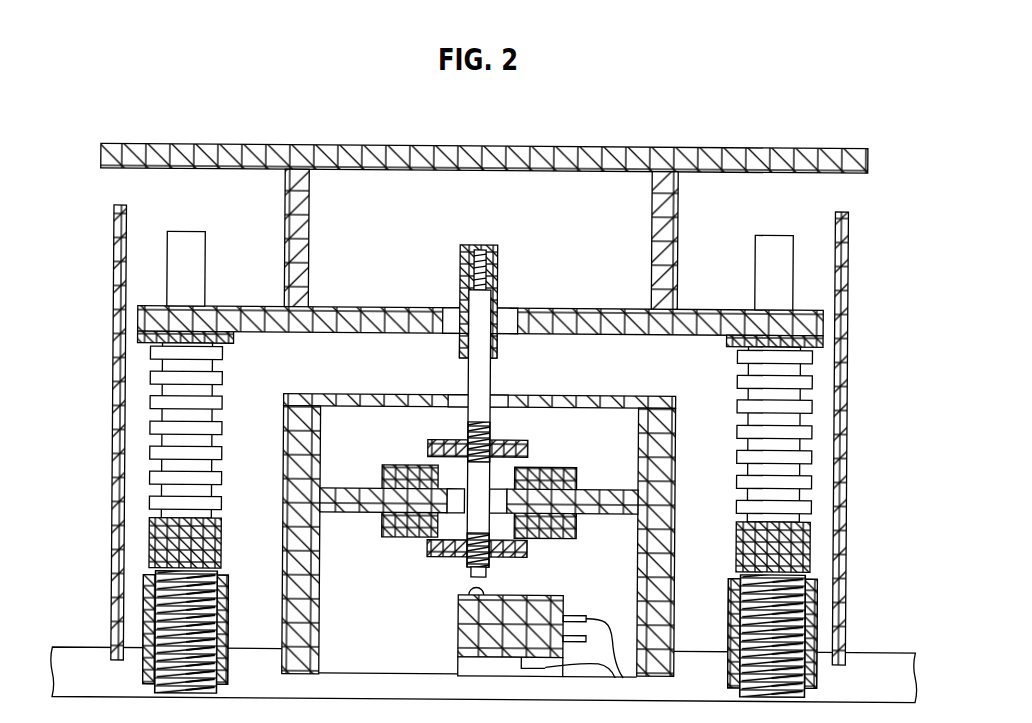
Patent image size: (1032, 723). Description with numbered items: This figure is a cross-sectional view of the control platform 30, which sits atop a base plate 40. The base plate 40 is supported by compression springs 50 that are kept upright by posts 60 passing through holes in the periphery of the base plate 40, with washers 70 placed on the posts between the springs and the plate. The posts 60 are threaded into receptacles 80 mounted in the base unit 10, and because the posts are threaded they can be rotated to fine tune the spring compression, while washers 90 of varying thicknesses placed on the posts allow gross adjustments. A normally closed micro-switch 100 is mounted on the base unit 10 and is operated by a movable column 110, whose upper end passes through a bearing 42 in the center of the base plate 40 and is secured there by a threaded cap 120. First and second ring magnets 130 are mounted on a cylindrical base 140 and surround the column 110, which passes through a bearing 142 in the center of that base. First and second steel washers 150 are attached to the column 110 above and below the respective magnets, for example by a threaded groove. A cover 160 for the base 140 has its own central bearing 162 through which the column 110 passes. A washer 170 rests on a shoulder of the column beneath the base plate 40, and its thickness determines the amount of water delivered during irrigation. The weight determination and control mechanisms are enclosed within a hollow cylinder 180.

The base unit 10 is at (872, 668).
The control platform 30 is at (540, 153).
The base plate 40 is at (600, 318).
The bearing 42 is at (442, 318).
The compression springs 50 is at (222, 435).
The posts 60 is at (190, 252).
The washers 70 is at (233, 343).
The receptacles 80 is at (229, 600).
The washers 90 is at (222, 535).
The micro-switch 100 is at (462, 612).
The movable column 110 is at (483, 385).
The threaded cap 120 is at (496, 260).
The ring magnets 130 is at (577, 475).
The cylindrical base 140 is at (310, 568).
The bearing 142 is at (451, 495).
The steel washers 150 is at (528, 447).
The cover 160 is at (608, 405).
The bearing 162 is at (458, 396).
The washer 170 is at (497, 347).
The hollow cylinder 180 is at (117, 357).